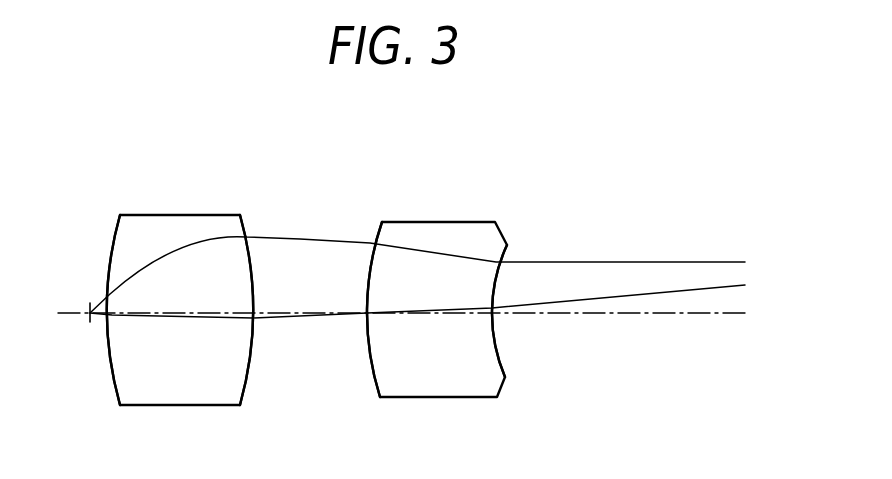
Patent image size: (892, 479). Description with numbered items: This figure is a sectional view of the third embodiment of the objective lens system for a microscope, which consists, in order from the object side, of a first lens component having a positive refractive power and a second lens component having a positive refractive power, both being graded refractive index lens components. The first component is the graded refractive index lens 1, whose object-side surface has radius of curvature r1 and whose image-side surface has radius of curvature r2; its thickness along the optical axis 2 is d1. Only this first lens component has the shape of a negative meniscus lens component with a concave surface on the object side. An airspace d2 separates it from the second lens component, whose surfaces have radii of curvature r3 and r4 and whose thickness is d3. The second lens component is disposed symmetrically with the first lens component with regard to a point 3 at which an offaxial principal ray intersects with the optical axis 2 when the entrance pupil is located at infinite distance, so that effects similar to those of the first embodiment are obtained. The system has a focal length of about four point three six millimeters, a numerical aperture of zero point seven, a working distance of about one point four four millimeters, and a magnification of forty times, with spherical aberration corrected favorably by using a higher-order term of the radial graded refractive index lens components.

The graded refractive index lens 1 is at (110, 320).
The optical axis 2 is at (67, 312).
The point 3 is at (365, 314).
The radius of curvature r1 is at (107, 283).
The radius of curvature r2 is at (251, 252).
The radius of curvature r3 is at (374, 253).
The radius of curvature r4 is at (502, 266).
The thickness d1 is at (170, 314).
The airspace d2 is at (283, 314).
The thickness d3 is at (437, 314).